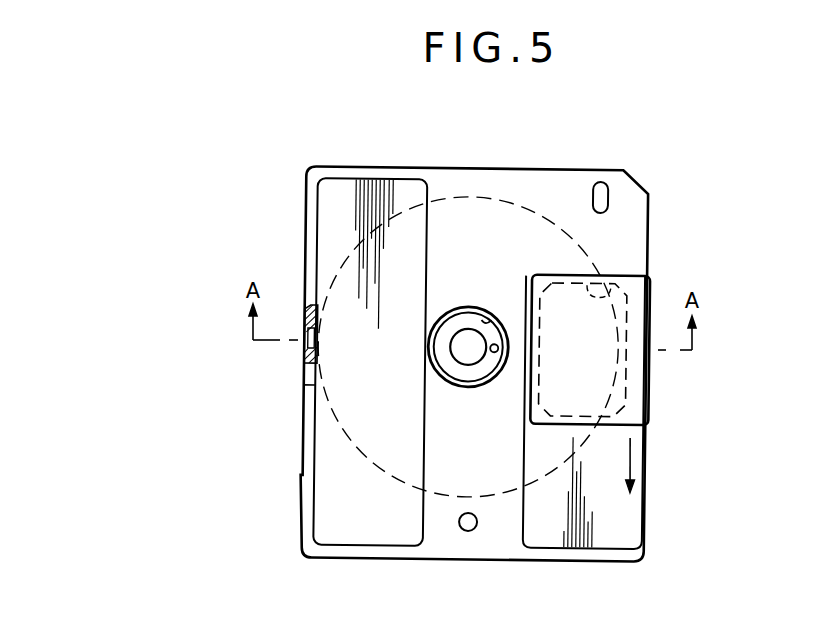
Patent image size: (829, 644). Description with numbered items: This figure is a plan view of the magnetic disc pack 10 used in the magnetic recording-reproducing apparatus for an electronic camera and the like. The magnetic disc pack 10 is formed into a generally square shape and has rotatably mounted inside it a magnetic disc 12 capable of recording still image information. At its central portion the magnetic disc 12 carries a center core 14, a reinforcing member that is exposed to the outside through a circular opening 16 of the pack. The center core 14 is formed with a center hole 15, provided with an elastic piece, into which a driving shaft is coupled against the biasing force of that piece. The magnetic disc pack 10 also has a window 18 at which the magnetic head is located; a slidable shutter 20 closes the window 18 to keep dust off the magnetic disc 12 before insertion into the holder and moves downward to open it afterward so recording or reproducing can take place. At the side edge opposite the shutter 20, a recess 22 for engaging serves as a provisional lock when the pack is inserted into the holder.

The magnetic disc pack 10 is at (524, 168).
The magnetic disc 12 is at (558, 225).
The center core 14 is at (455, 320).
The center hole 15 is at (460, 352).
The circular opening 16 is at (485, 316).
The window 18 is at (600, 290).
The shutter 20 is at (636, 296).
The recess 22 is at (303, 342).